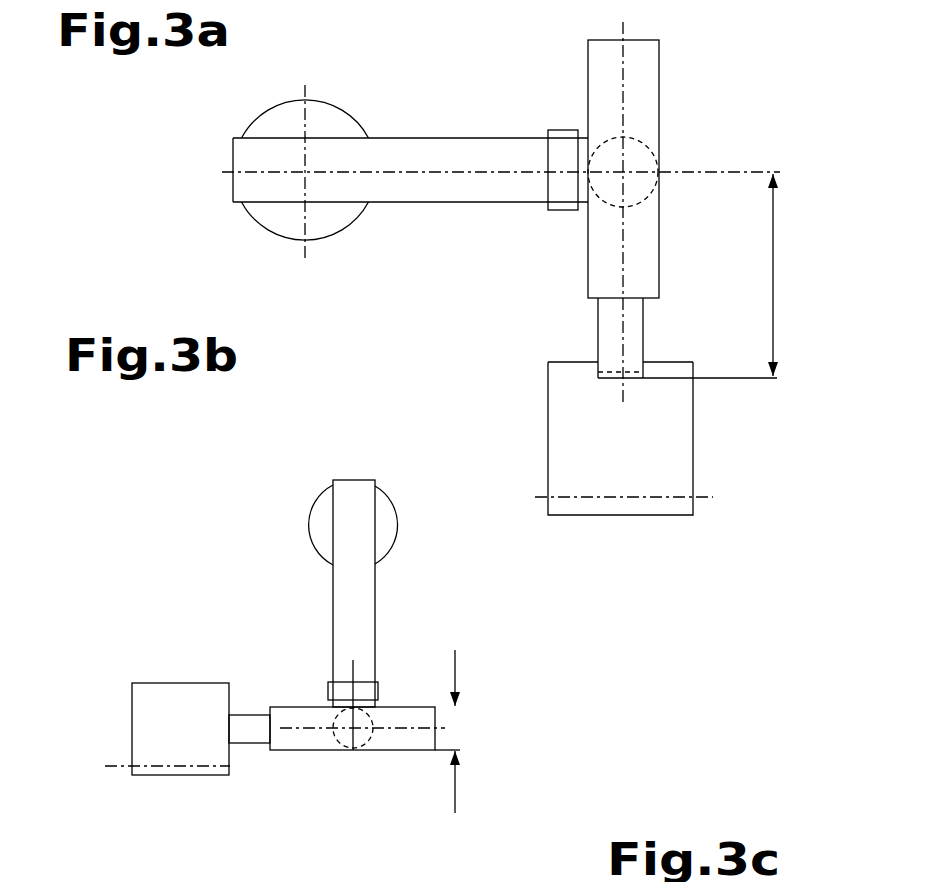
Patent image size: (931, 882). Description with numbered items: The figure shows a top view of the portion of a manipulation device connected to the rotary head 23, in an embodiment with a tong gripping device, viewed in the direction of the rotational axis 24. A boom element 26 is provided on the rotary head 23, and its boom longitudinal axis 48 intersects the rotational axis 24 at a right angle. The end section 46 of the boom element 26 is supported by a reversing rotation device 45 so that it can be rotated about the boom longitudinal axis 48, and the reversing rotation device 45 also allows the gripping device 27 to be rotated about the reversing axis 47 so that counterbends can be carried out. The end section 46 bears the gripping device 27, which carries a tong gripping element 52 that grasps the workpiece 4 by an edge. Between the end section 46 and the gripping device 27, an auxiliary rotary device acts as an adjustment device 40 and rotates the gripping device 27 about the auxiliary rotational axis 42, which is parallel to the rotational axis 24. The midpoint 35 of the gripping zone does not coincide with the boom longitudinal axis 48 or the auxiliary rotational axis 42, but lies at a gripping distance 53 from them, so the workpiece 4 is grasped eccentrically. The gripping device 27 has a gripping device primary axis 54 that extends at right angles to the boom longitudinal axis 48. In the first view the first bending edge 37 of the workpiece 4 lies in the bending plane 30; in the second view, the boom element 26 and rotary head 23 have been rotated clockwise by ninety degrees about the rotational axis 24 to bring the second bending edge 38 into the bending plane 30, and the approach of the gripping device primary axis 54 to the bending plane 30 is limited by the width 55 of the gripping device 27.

In FIG. 3A, the workpiece 4 is at (570, 375).
In FIG. 3B, the workpiece 4 is at (165, 697).
In FIG. 3A, the rotary head 23 is at (275, 118).
In FIG. 3B, the rotary head 23 is at (323, 508).
In FIG. 3A, the rotational axis 24 is at (306, 170).
In FIG. 3A, the boom element 26 is at (440, 145).
In FIG. 3B, the boom element 26 is at (343, 595).
In FIG. 3A, the gripping device 27 is at (648, 102).
In FIG. 3B, the gripping device 27 is at (405, 742).
In FIG. 3A, the bending plane 30 is at (714, 494).
In FIG. 3B, the bending plane 30 is at (107, 765).
In FIG. 3A, the midpoint of the gripping zone 35 is at (628, 371).
In FIG. 3A, the base plane 37 is at (663, 494).
In FIG. 3B, the second bending edge 38 is at (161, 764).
In FIG. 3A, the adjustment device 40 is at (668, 151).
In FIG. 3B, the adjustment device 40 is at (342, 753).
In FIG. 3A, the auxiliary rotational axis 42 is at (624, 172).
In FIG. 3A, the reversing rotation device 45 is at (560, 137).
In FIG. 3B, the reversing rotation device 45 is at (330, 690).
In FIG. 3A, the end section 46 is at (584, 137).
In FIG. 3A, the reversing axis 47 is at (684, 168).
In FIG. 3A, the boom longitudinal axis 48 is at (363, 170).
In FIG. 3A, the tong gripping element 52 is at (632, 328).
In FIG. 3B, the tong gripping element 52 is at (247, 722).
In FIG. 3A, the gripping distance 53 is at (775, 286).
In FIG. 3A, the gripping device primary axis 54 is at (626, 78).
In FIG. 3B, the gripping device primary axis 54 is at (302, 730).
In FIG. 3B, the width of the gripping device 55 is at (457, 727).